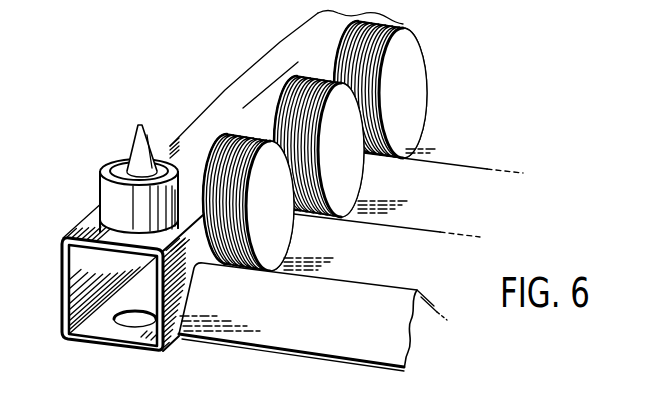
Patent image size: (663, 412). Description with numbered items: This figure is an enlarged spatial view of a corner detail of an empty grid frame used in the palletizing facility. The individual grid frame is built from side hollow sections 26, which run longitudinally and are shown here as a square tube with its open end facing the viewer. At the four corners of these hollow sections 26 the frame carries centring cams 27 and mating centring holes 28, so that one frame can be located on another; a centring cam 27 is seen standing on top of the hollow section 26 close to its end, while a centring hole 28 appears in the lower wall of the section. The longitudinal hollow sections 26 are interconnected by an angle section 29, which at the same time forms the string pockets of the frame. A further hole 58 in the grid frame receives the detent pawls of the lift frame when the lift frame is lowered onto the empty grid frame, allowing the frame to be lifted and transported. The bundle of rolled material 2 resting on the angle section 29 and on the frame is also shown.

The rolls 2 is at (354, 188).
The side hollow section 26 is at (238, 100).
The centring cam 27 is at (147, 150).
The centring hole 28 is at (138, 318).
The angle section 29 is at (243, 328).
The hole 58 is at (77, 285).